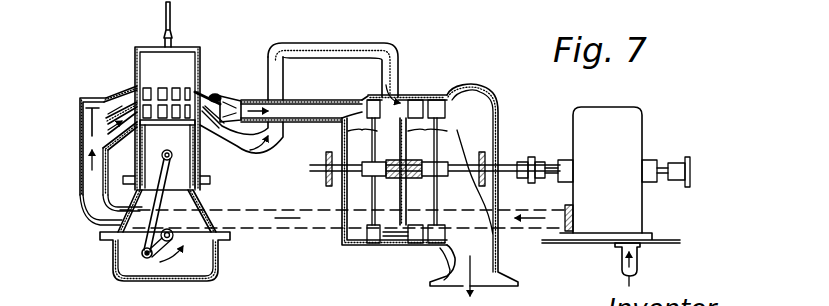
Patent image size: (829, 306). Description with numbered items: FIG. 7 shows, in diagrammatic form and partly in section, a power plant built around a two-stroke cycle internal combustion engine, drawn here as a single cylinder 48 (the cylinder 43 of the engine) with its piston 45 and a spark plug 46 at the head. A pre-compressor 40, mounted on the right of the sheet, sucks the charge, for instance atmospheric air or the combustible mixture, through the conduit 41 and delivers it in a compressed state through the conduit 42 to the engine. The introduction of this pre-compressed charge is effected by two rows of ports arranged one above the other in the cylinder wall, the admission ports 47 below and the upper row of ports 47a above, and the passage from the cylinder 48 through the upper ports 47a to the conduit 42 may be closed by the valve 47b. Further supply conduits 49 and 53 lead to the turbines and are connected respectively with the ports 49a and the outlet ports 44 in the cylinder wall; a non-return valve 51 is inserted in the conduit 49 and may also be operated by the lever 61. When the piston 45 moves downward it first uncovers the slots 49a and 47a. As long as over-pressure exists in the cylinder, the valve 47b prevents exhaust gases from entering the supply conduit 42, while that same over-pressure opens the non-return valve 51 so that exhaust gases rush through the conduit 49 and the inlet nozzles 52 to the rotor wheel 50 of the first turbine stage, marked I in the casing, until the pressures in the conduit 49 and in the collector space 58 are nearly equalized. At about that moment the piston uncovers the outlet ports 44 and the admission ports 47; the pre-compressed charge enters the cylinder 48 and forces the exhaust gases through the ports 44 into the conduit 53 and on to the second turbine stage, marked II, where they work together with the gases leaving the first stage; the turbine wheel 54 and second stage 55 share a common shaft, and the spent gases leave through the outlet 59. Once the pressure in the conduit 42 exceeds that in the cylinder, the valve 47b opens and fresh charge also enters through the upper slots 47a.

The pre-compressor 40 is at (603, 175).
The conduit 41 is at (638, 260).
The conduit 42 is at (270, 214).
The cylinder 43 is at (143, 47).
The outlet ports 44 is at (208, 132).
The piston 45 is at (185, 183).
The spark plug 46 is at (172, 32).
The admission ports 47 is at (157, 122).
The upper row of ports 47a is at (135, 98).
The valve 47b is at (98, 100).
The cylinder 48 is at (166, 86).
The conduit 49 is at (303, 118).
The ports 49a is at (192, 83).
The rotor wheel 50 is at (372, 200).
The non-return valve 51 is at (234, 105).
The inlet nozzles 52 is at (357, 102).
The conduit 53 is at (340, 48).
The turbine wheel 54 is at (407, 97).
The second compressor stage 55 is at (440, 133).
The collector space 58 is at (394, 238).
The exhaust outlet 59 is at (493, 264).
The lever 61 is at (222, 96).